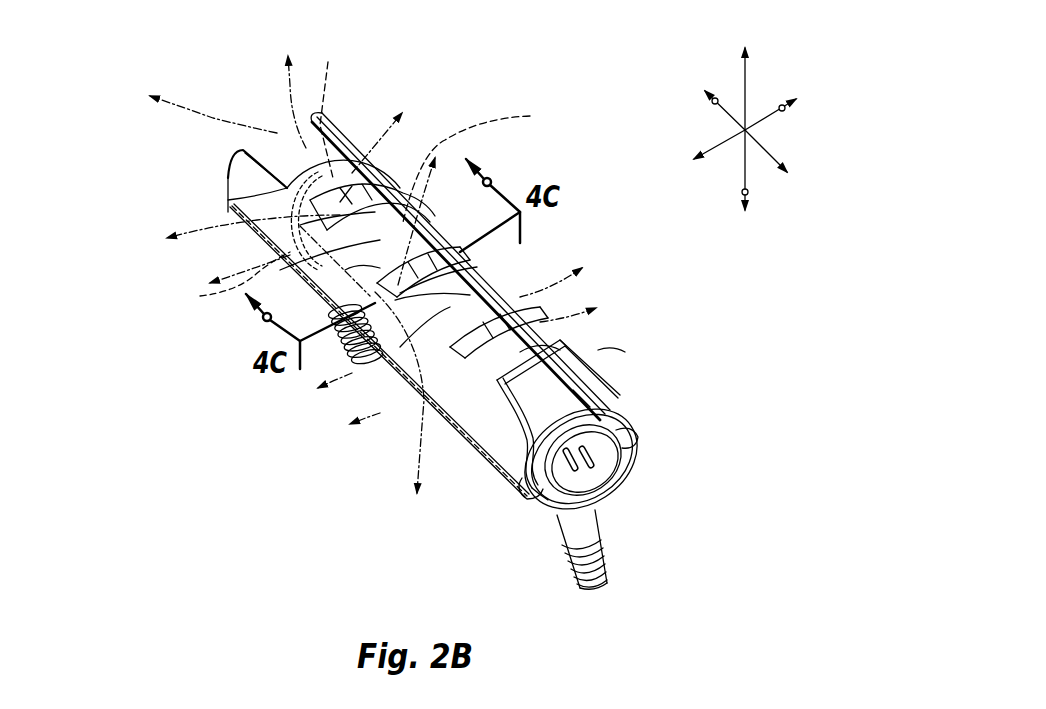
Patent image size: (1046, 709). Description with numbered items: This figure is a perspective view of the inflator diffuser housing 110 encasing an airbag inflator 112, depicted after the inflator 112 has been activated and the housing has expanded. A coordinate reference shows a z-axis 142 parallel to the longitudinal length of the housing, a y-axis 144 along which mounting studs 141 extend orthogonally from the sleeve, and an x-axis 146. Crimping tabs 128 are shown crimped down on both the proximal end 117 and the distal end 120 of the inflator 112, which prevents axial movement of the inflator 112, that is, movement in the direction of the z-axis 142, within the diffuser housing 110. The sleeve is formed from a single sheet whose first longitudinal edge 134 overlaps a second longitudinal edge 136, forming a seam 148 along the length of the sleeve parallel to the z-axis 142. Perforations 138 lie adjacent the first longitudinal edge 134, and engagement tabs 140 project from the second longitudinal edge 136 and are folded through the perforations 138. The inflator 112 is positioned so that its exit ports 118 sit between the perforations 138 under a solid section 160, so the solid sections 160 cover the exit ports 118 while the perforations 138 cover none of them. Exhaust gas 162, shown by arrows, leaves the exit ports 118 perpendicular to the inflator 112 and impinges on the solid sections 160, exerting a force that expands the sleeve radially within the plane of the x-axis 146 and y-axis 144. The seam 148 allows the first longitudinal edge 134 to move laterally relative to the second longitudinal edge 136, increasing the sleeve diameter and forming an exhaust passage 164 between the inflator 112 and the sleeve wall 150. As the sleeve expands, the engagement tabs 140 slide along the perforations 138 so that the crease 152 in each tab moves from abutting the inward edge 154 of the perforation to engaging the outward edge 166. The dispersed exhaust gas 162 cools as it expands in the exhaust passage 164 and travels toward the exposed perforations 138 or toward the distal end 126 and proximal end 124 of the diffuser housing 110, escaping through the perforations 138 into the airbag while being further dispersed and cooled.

The inflator diffuser housing 110 is at (238, 491).
The airbag inflator 112 is at (573, 390).
The proximal end of the inflator 117 is at (613, 496).
The exit ports 118 is at (484, 162).
The distal end of the inflator 120 is at (328, 108).
The proximal end of the diffuser housing 124 is at (622, 481).
The distal end of the diffuser housing 126 is at (228, 170).
The crimping tabs 128 is at (735, 453).
The first longitudinal edge 134 is at (480, 302).
The second longitudinal edge 136 is at (525, 385).
The perforations 138 is at (240, 196).
The engagement tabs 140 is at (398, 210).
The mounting studs 141 is at (603, 565).
The z-axis 142 is at (770, 147).
The y-axis 144 is at (748, 86).
The x-axis 146 is at (722, 145).
The seam 148 is at (598, 350).
The sleeve wall 150 is at (553, 514).
The crease 152 is at (385, 178).
The inward edge of the perforation 154 is at (280, 227).
The solid section 160 is at (345, 270).
The exhaust gas 162 is at (290, 81).
The exhaust passage 164 is at (623, 417).
The outward edge of the perforation 166 is at (530, 352).